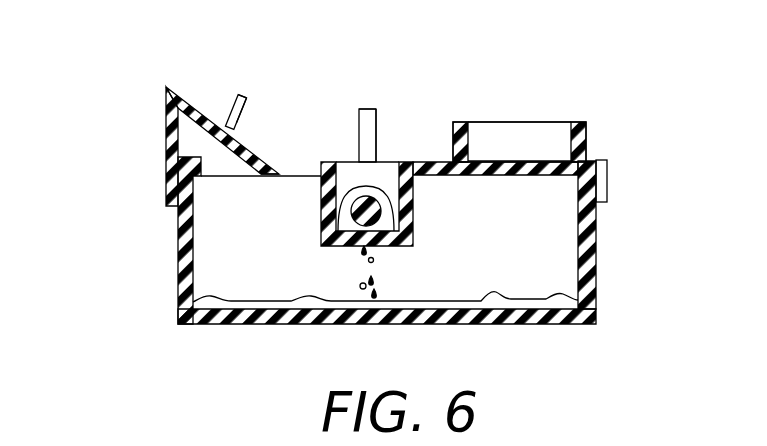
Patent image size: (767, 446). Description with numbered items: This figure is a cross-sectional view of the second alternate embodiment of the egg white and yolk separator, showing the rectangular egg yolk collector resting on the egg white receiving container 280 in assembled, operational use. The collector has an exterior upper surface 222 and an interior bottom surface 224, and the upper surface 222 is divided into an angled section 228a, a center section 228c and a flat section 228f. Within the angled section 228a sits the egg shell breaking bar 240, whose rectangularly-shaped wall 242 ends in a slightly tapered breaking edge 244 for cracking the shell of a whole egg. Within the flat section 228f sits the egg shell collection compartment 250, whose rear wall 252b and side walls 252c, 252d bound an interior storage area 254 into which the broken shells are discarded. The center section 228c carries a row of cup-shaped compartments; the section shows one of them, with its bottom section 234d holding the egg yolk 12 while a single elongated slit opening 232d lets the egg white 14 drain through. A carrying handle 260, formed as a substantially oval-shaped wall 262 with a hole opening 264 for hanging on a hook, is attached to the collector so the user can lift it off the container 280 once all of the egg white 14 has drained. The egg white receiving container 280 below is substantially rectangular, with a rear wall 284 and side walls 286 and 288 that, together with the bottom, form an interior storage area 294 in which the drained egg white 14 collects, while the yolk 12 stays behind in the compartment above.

The egg yolk 12 is at (345, 249).
The egg white 14 is at (320, 237).
The upper surface 222 is at (348, 160).
The interior bottom surface 224 is at (480, 177).
The angled section 228a is at (243, 137).
The center section 228c is at (278, 158).
The flat section 228f is at (591, 163).
The slit opening 232d is at (372, 240).
The bottom section 234d is at (403, 237).
The egg shell breaking bar 240 is at (228, 98).
The rectangularly-shaped wall 242 is at (247, 118).
The tapered breaking edge 244 is at (241, 108).
The egg shell collection compartment 250 is at (536, 120).
The rear wall 252b is at (482, 138).
The side wall 252c is at (455, 136).
The side wall 252d is at (585, 133).
The interior storage area 254 is at (543, 151).
The carrying handle 260 is at (373, 107).
The oval-shaped wall 262 is at (375, 152).
The hole opening 264 is at (375, 126).
The egg white receiving container 280 is at (175, 273).
The rear wall 284 is at (257, 240).
The side wall 286 is at (176, 235).
The side wall 288 is at (385, 312).
The interior storage area 294 is at (478, 277).